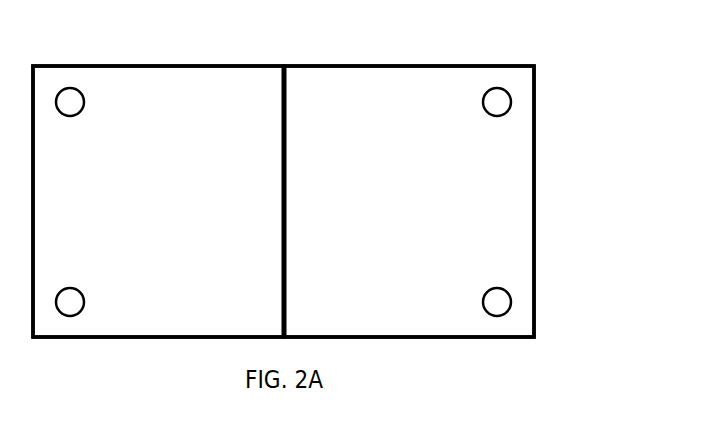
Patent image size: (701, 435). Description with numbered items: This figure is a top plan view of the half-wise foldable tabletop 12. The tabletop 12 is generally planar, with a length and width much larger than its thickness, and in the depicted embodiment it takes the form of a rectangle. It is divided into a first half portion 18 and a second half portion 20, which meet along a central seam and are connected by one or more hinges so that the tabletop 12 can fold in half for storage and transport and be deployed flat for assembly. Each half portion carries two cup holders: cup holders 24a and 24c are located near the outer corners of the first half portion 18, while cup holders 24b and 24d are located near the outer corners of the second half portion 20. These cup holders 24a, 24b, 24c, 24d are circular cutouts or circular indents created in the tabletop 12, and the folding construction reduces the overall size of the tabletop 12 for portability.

The tabletop 12 is at (565, 63).
The first half portion 18 is at (170, 65).
The second half portion 20 is at (393, 65).
The cup holder 24a is at (92, 113).
The cup holder 24b is at (479, 113).
The cup holder 24c is at (87, 288).
The cup holder 24d is at (481, 288).